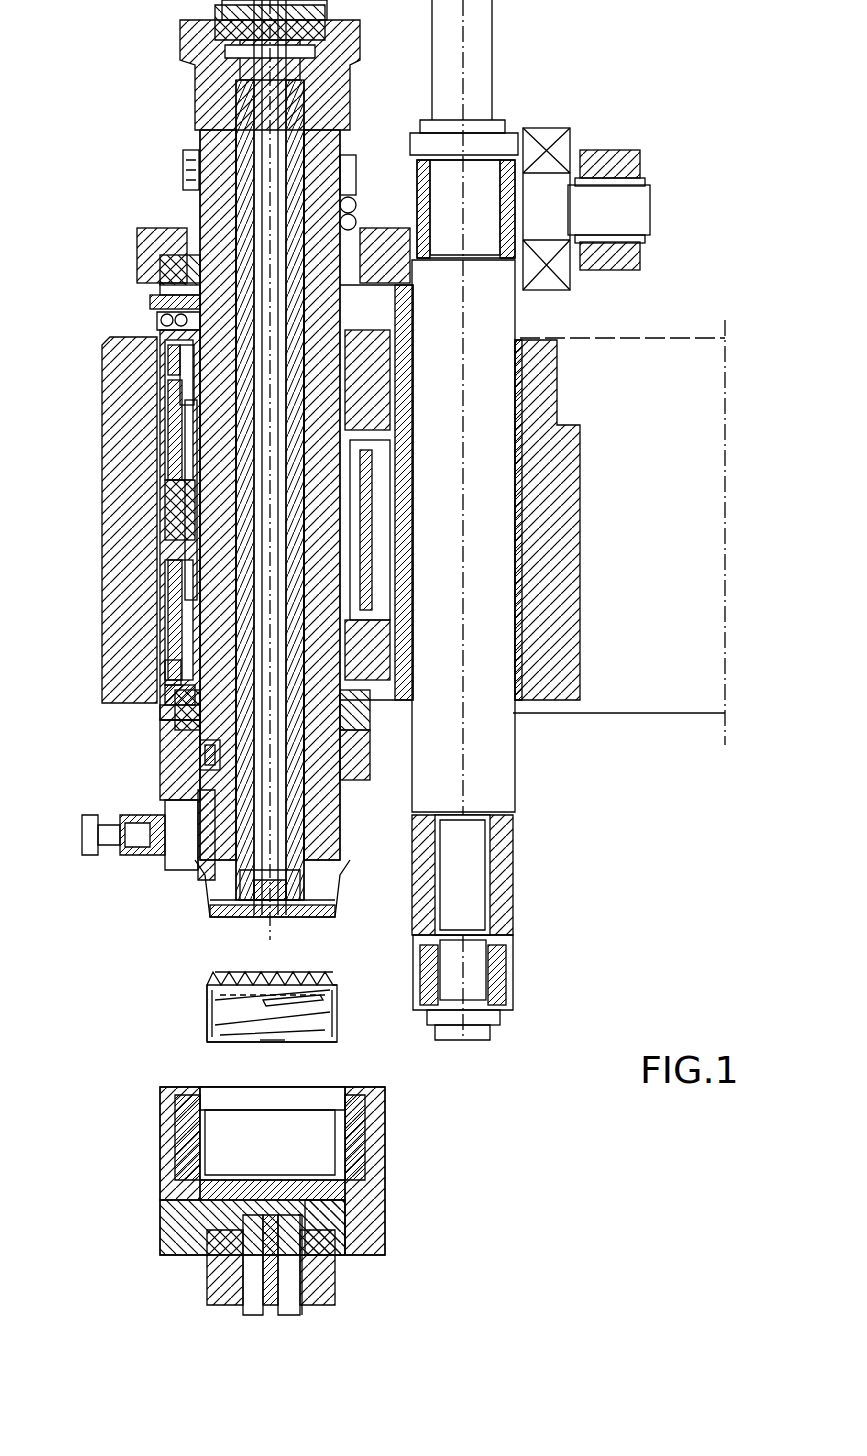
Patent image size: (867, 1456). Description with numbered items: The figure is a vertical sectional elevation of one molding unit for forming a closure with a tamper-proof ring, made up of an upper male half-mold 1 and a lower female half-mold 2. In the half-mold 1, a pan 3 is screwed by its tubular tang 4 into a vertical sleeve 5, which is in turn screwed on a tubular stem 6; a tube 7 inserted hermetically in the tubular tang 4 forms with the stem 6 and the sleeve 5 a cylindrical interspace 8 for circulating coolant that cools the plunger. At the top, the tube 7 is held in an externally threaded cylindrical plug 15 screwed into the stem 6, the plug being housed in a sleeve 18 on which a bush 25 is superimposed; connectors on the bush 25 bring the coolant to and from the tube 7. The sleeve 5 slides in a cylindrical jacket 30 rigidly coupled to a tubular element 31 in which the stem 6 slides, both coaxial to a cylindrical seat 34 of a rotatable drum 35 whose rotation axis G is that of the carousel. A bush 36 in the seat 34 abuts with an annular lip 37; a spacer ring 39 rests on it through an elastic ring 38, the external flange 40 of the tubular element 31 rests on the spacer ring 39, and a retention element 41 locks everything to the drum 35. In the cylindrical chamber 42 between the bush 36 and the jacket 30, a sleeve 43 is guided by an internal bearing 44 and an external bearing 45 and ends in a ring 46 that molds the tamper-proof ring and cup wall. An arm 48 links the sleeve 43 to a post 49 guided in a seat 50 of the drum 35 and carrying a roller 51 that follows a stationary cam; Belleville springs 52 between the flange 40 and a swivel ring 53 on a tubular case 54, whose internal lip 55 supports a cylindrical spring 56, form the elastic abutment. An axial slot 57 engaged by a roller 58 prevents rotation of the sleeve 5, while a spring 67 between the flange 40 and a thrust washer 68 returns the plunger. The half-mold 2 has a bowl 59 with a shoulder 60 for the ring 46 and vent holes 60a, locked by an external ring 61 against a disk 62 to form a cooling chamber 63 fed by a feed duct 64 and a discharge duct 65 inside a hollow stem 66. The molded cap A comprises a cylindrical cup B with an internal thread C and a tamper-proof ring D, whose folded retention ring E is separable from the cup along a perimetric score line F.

The upper male half-mold 1 is at (115, 895).
The lower female half-mold 2 is at (150, 1207).
The pan 3 is at (295, 910).
The tubular tang 4 is at (235, 910).
The vertical sleeve 5 is at (310, 605).
The tubular stem 6 is at (330, 515).
The tube 7 is at (290, 775).
The cylindrical interspace 8 is at (295, 742).
The externally threaded cylindrical plug 15 is at (205, 12).
The sleeve 18 is at (225, 30).
The bush 25 is at (225, 58).
The cylindrical jacket 30 is at (170, 568).
The tubular element 31 is at (360, 400).
The cylindrical seat 34 is at (170, 760).
The rotatable drum 35 is at (110, 520).
The bush 36 is at (170, 665).
The annular lip 37 is at (157, 325).
The elastic ring 38 is at (150, 305).
The spacer ring 39 is at (165, 290).
The external flange 40 is at (168, 270).
The retention element 41 is at (160, 240).
The cylindrical chamber 42 is at (190, 535).
The sleeve 43 is at (205, 755).
The internal bearing 44 is at (175, 690).
The external bearing 45 is at (175, 710).
The annular segment or ring 46 is at (210, 905).
The arm 48 is at (425, 860).
The post or stem 49 is at (510, 782).
The seat 50 is at (520, 690).
The roller 51 is at (618, 150).
The Belleville springs 52 is at (168, 358).
The swivel ring 53 is at (182, 395).
The tubular case 54 is at (185, 470).
The internal lip 55 is at (185, 625).
The cylindrical spring 56 is at (168, 440).
The axial slot 57 is at (200, 862).
The roller 58 is at (82, 835).
The bowl 59 is at (205, 1148).
The shoulder 60 is at (330, 1110).
The holes 60a is at (180, 1108).
The external ring 61 is at (375, 1190).
The disk 62 is at (345, 1235).
The chamber 63 is at (365, 1120).
The feed duct 64 is at (248, 1265).
The discharge duct 65 is at (290, 1295).
The hollow stem 66 is at (310, 1275).
The spring 67 is at (356, 210).
The thrust washer 68 is at (183, 158).
The cap A is at (170, 1055).
The cylindrical cup B is at (330, 1033).
The internal thread C is at (270, 1040).
The tamper-proof ring D is at (207, 995).
The ring E is at (328, 975).
The perimetric score line F is at (330, 1005).
The rotation axis G is at (720, 745).